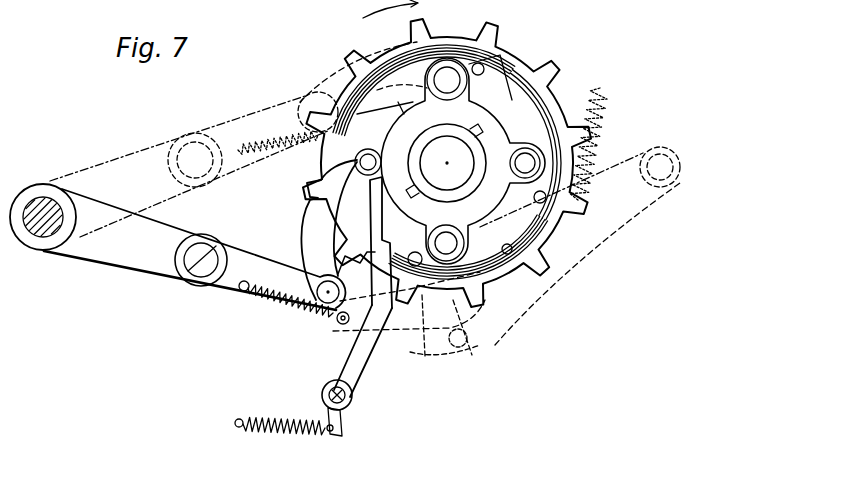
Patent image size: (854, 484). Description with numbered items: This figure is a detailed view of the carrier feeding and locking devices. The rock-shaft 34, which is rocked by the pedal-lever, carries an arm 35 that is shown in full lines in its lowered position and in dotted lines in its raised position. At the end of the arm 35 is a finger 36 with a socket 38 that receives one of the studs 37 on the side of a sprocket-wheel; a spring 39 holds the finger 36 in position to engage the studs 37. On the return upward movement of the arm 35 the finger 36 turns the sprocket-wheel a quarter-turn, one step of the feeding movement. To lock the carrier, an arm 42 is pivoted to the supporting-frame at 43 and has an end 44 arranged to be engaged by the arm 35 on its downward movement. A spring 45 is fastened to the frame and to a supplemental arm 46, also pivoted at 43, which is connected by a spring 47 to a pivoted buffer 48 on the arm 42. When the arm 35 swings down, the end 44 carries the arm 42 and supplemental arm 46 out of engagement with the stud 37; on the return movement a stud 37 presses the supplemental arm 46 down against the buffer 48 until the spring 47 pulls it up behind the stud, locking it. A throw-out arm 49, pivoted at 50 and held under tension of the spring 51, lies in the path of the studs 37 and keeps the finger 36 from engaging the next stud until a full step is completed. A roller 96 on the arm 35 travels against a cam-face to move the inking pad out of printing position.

The rock-shaft 34 is at (44, 212).
The arm 35 is at (194, 249).
The finger 36 is at (318, 222).
The stud 37 is at (488, 119).
The socket 38 is at (355, 175).
The spring 39 is at (300, 311).
The arm 42 is at (420, 328).
The pivot 43 is at (676, 169).
The end 44 is at (330, 325).
The spring 45 is at (608, 99).
The supplemental arm 46 is at (626, 197).
The spring 47 is at (525, 252).
The buffer 48 is at (473, 323).
The throw-out arm 49 is at (341, 363).
The pivot 50 is at (349, 398).
The spring 51 is at (286, 436).
The roller 96 is at (196, 279).